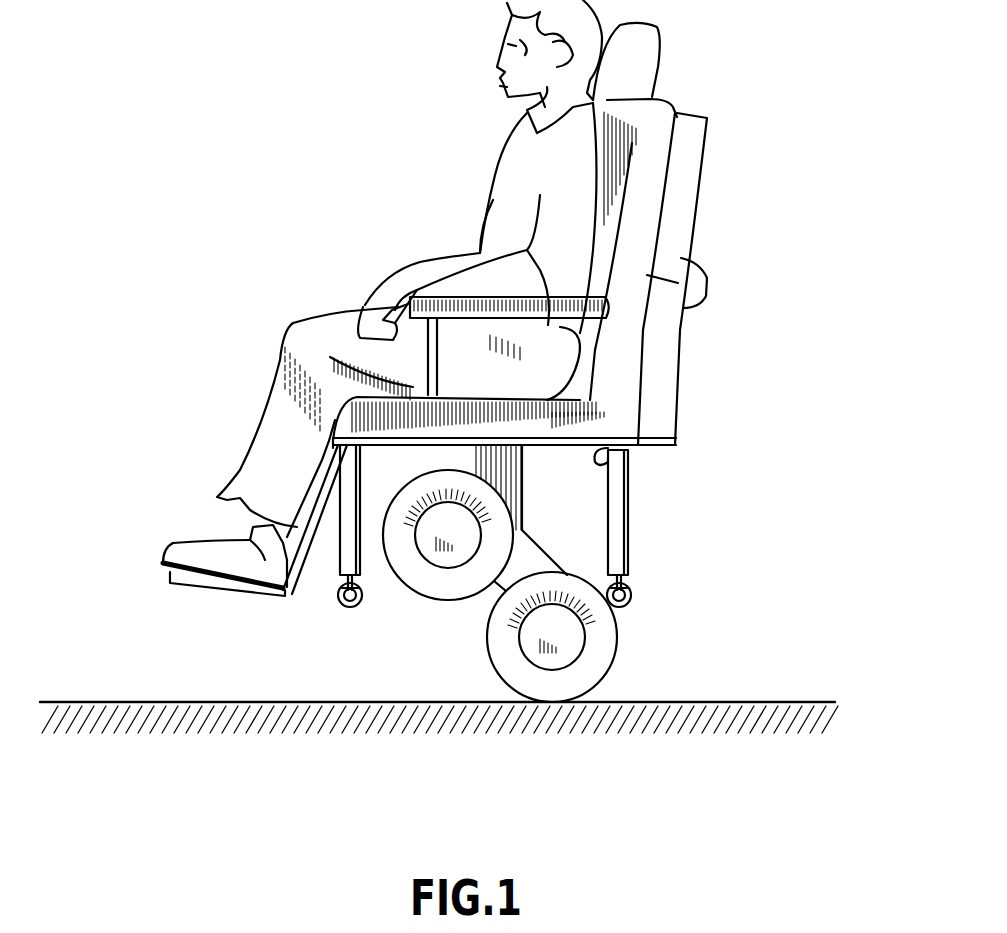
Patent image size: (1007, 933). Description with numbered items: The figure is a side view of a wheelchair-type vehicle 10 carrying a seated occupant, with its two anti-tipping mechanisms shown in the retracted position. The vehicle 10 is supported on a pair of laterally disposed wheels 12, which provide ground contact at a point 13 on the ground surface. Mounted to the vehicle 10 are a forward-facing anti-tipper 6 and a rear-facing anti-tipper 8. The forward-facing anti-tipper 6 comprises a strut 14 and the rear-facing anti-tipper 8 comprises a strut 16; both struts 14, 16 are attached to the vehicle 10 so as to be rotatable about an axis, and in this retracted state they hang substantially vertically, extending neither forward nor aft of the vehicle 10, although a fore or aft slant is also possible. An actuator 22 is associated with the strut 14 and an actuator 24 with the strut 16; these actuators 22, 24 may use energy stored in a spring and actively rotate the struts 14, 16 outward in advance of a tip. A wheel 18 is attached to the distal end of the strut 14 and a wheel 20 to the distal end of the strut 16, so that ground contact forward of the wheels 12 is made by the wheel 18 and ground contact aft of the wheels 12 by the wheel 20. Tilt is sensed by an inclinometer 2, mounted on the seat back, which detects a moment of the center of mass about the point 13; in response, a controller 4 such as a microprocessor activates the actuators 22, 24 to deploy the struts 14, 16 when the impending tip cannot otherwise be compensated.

The wheelchair-type vehicle 10 is at (706, 74).
The inclinometer 2 is at (675, 377).
The controller 4 is at (693, 198).
The forward-facing anti-tipper 6 is at (385, 592).
The rear-facing anti-tipper 8 is at (660, 570).
The wheels 12 is at (605, 680).
The point of ground contact 13 is at (557, 710).
The strut 14 is at (295, 601).
The strut 16 is at (630, 513).
The wheel 18 is at (347, 607).
The wheel 20 is at (627, 603).
The actuator 22 is at (360, 452).
The actuator 24 is at (628, 451).